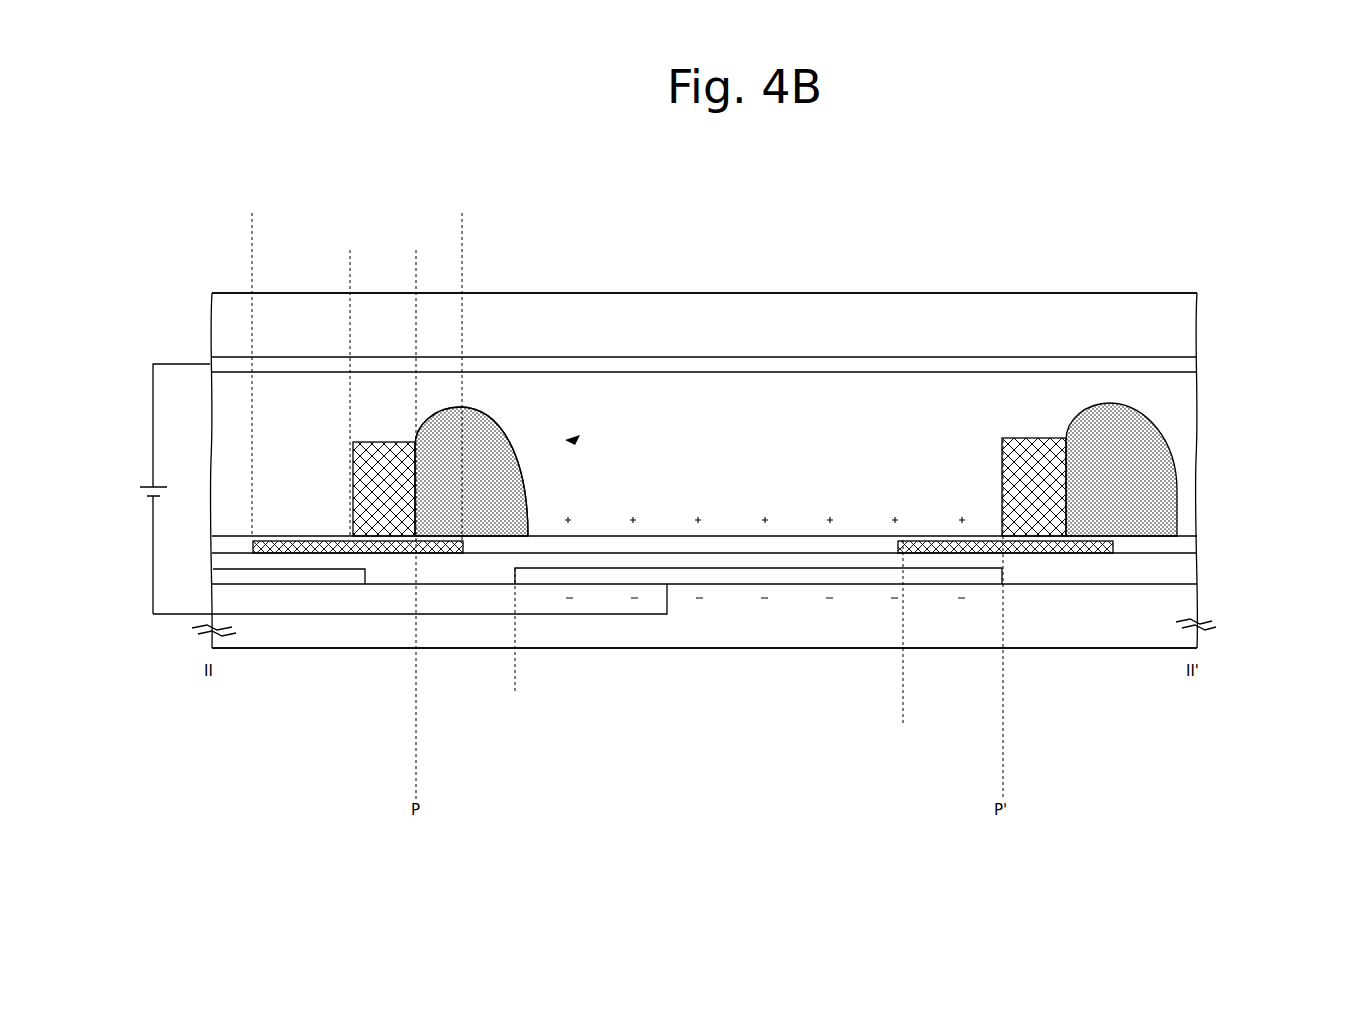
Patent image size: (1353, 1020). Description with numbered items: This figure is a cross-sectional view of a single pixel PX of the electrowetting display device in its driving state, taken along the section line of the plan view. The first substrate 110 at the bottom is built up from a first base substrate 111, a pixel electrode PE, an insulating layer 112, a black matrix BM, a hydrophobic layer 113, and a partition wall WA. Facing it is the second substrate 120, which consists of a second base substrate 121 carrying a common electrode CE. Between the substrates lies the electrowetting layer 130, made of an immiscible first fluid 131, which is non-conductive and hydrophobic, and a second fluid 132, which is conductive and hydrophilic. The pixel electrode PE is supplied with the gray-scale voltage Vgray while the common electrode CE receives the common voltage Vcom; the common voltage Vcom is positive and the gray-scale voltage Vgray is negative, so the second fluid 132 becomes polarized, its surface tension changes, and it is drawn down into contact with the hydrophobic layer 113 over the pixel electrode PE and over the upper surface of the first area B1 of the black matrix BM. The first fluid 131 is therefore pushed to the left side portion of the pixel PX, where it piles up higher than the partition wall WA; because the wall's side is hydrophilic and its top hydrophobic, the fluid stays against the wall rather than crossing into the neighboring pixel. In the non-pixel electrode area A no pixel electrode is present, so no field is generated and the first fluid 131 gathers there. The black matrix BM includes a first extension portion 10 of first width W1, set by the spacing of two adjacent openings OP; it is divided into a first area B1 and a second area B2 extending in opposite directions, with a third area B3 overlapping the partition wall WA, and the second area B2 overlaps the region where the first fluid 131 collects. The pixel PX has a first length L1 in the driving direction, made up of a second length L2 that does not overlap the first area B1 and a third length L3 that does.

The second substrate 120 is at (1271, 312).
The second base substrate 121 is at (1187, 318).
The common electrode CE is at (1187, 360).
The first substrate 110 is at (1273, 452).
The hydrophobic layer 113 is at (1190, 545).
The insulating layer 112 is at (1190, 565).
The first base substrate 111 is at (1210, 627).
The pixel electrode PE is at (1012, 572).
The first extension portion 10 is at (387, 558).
The black matrix BM is at (1080, 534).
The partition wall WA is at (1068, 463).
The electrowetting layer 130 is at (630, 230).
The first fluid 131 is at (472, 405).
The second fluid 132 is at (572, 443).
The opening OP is at (897, 541).
The common voltage Vcom is at (143, 482).
The gray-scale voltage Vgray is at (148, 502).
The first width W1 is at (462, 219).
The first area B1 is at (350, 258).
The second area B2 is at (462, 258).
The third area B3 is at (416, 258).
The first length L1 is at (1002, 470).
The second length L2 is at (903, 725).
The third length L3 is at (1003, 725).
The non-pixel electrode area A is at (515, 692).
The pixel PX is at (1003, 774).